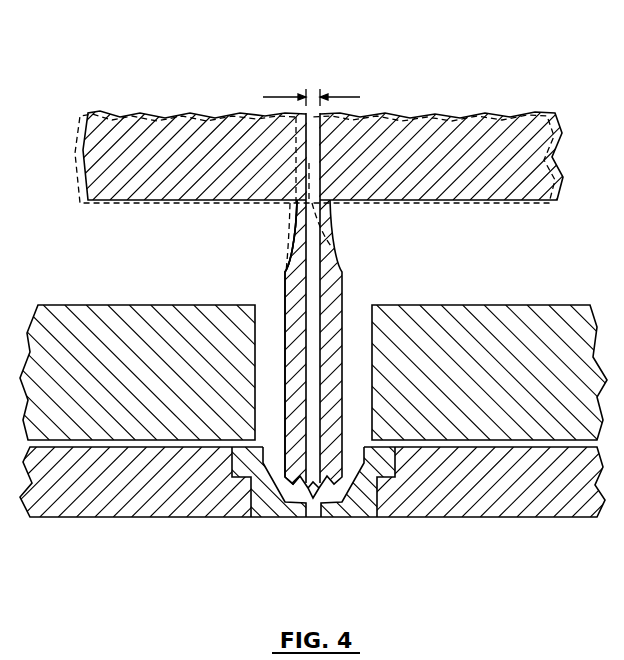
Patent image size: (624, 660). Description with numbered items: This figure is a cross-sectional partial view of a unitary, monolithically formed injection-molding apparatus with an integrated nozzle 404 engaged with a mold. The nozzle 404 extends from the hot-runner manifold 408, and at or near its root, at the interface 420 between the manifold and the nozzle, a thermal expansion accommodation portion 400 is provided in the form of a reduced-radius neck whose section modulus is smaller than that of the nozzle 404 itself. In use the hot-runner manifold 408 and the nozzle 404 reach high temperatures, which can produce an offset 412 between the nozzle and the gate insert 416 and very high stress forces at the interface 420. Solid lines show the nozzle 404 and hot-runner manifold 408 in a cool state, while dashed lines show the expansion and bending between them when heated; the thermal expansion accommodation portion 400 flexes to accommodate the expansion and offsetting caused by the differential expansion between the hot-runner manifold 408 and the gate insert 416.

The thermal expansion accommodation portion 400 is at (337, 212).
The nozzle 404 is at (282, 397).
The hot-runner manifold 408 is at (200, 133).
The offset 412 is at (312, 92).
The gate insert 416 is at (358, 505).
The interface 420 is at (282, 212).